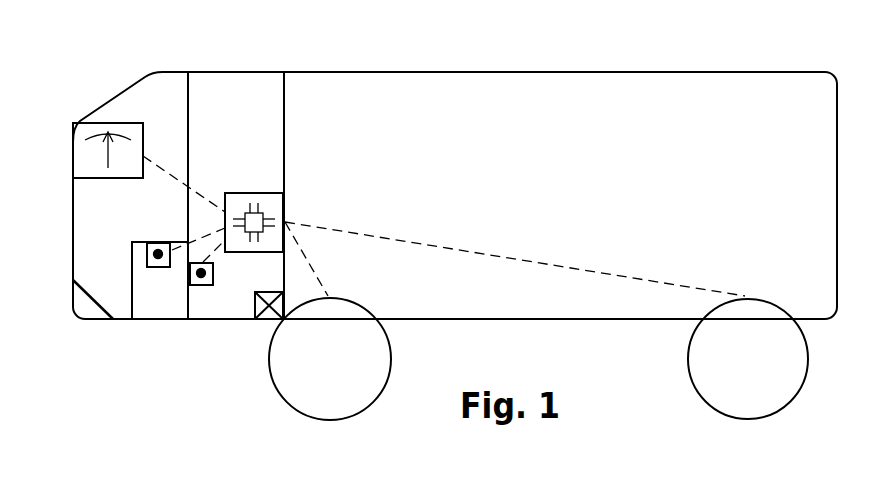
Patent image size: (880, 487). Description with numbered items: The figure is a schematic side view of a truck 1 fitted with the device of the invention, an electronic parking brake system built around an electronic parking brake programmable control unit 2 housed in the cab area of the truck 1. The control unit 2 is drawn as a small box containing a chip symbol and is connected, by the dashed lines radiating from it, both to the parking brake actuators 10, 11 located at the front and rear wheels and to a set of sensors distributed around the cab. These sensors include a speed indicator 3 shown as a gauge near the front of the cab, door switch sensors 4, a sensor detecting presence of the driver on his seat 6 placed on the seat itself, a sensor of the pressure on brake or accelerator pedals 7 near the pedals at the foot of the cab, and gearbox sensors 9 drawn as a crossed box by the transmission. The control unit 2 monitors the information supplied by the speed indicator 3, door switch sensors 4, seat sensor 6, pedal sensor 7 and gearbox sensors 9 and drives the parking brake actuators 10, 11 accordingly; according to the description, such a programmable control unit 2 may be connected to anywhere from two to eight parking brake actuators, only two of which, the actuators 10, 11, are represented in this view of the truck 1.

The truck 1 is at (507, 72).
The electronic parking brake programmable control unit 2 is at (242, 202).
The speed indicator 3 is at (82, 165).
The door switch sensors 4 is at (195, 285).
The sensor detecting presence of the driver on his seat 6 is at (158, 267).
The sensor of the pressure on brake or accelerator pedals 7 is at (97, 301).
The gearbox sensors 9 is at (255, 305).
The parking brake actuator 10 is at (333, 297).
The parking brake actuator 11 is at (747, 297).